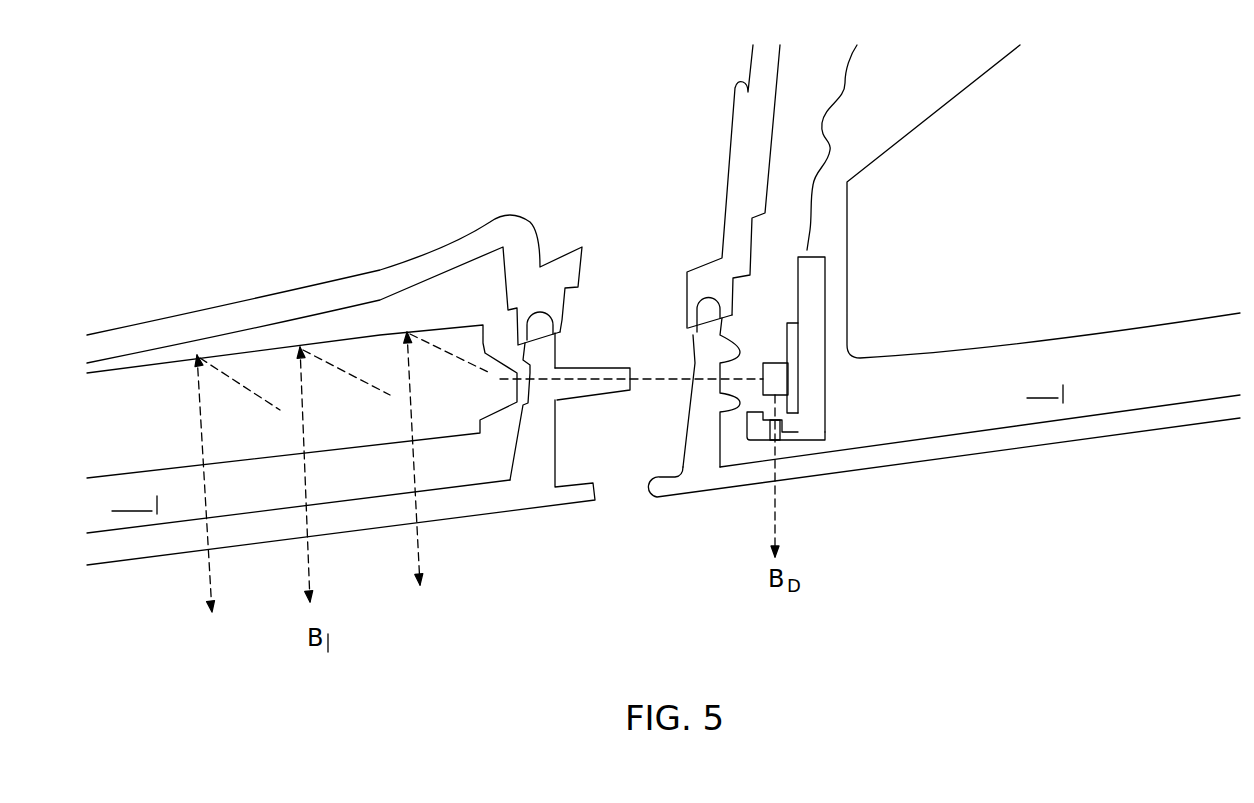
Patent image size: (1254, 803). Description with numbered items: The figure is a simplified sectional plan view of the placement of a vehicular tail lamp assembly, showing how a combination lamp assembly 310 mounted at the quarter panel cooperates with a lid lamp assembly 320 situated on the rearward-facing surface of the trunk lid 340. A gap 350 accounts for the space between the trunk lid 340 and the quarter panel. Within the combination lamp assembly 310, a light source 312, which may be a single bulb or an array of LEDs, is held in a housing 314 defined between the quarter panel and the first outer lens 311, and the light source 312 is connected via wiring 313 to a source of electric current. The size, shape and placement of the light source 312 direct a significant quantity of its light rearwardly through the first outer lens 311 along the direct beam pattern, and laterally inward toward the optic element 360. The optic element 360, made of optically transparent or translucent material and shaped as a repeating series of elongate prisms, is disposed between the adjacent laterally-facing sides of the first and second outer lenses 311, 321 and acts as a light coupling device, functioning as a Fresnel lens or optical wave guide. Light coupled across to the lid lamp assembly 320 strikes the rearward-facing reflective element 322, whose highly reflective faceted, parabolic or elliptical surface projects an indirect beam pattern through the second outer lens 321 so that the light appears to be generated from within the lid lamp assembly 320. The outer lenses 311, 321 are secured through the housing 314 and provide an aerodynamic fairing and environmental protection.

The combination lamp assembly 310 is at (958, 522).
The first outer lens 311 is at (838, 488).
The light source 312 is at (799, 368).
The wiring 313 is at (846, 83).
The housing 314 is at (817, 402).
The lid lamp assembly 320 is at (145, 595).
The second outer lens 321 is at (508, 521).
The rearward-facing reflective element 322 is at (148, 375).
The trunk lid 340 is at (328, 300).
The gap 350 is at (623, 493).
The optic element 360 is at (696, 366).